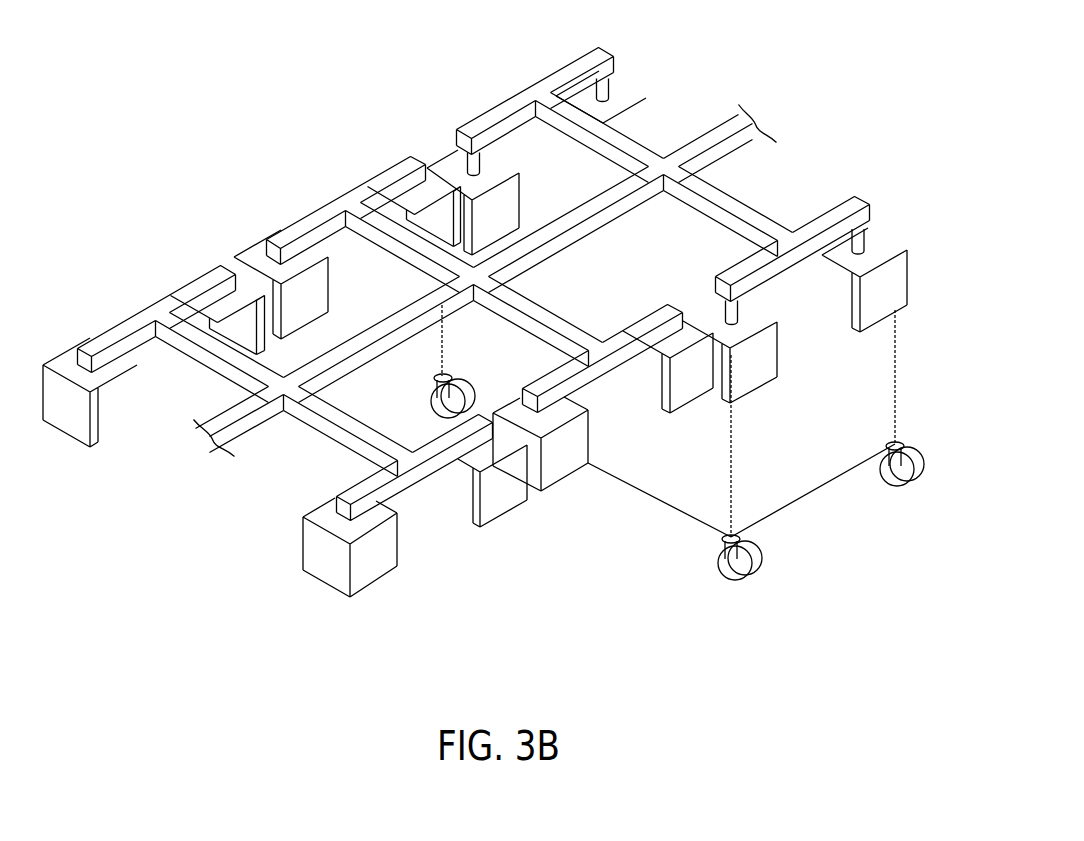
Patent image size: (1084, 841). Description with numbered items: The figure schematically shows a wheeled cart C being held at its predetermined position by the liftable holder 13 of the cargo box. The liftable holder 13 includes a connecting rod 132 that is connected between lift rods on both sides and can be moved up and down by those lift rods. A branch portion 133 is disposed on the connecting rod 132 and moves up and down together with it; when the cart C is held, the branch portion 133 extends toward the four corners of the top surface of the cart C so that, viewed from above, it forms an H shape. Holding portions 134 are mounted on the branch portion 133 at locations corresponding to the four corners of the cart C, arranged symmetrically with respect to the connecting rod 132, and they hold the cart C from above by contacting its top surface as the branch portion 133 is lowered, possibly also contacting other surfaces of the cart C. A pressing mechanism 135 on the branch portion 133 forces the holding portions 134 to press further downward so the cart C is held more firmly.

The liftable holder 13 is at (326, 166).
The connecting rod 132 is at (720, 132).
The branch portion 133 is at (849, 198).
The holding portion 134 is at (893, 279).
The pressing mechanism 135 is at (866, 236).
The cart C is at (896, 364).